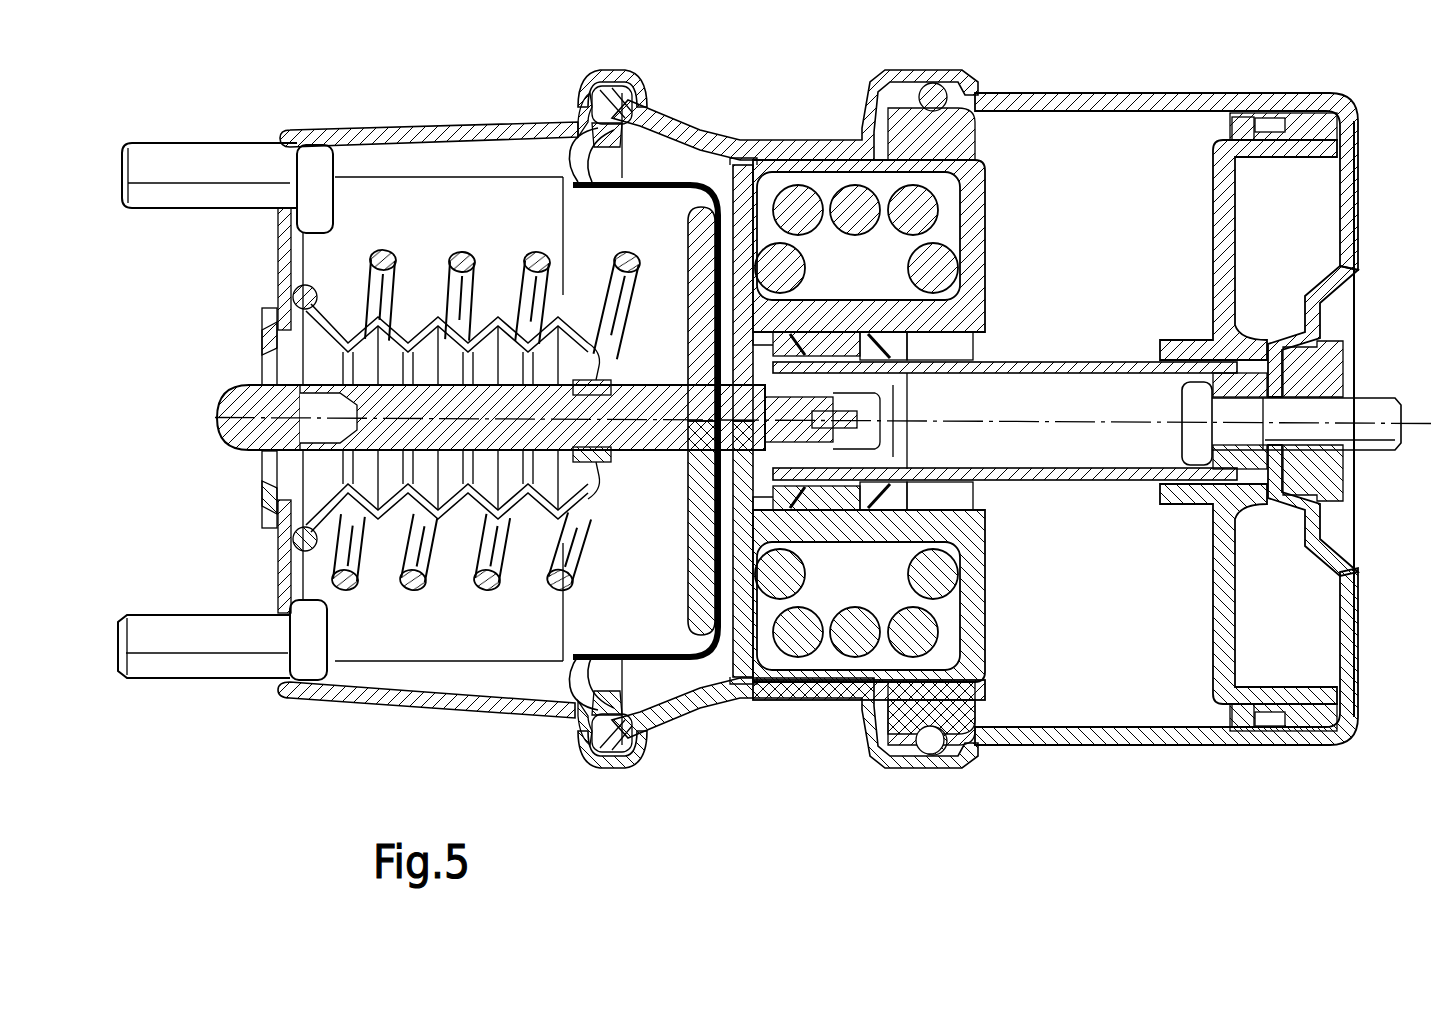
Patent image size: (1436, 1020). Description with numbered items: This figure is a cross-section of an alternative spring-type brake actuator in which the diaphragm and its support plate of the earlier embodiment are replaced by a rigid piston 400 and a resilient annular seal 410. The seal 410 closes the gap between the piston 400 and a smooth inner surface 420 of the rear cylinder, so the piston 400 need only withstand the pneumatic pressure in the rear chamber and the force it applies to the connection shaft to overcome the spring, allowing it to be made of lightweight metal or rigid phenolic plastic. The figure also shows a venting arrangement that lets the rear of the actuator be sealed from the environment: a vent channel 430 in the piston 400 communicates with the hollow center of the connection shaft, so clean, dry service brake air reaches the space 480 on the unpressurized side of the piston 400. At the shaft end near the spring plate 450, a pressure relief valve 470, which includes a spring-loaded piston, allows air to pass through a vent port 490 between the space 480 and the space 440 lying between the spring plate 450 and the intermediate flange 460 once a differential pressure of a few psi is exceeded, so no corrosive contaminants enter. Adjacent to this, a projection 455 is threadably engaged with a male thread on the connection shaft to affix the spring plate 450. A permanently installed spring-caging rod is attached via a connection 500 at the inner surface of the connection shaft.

The rigid piston 400 is at (1217, 198).
The resilient annular seal 410 is at (1240, 723).
The smooth inner surface 420 is at (1030, 727).
The vent channel 430 is at (1273, 357).
The space 440 is at (822, 243).
The spring plate 450 is at (740, 645).
The projection 455 is at (948, 383).
The intermediate flange 460 is at (787, 700).
The pressure relief valve 470 is at (690, 523).
The space 480 is at (1298, 635).
The vent port 490 is at (773, 353).
The connection 500 is at (1195, 410).